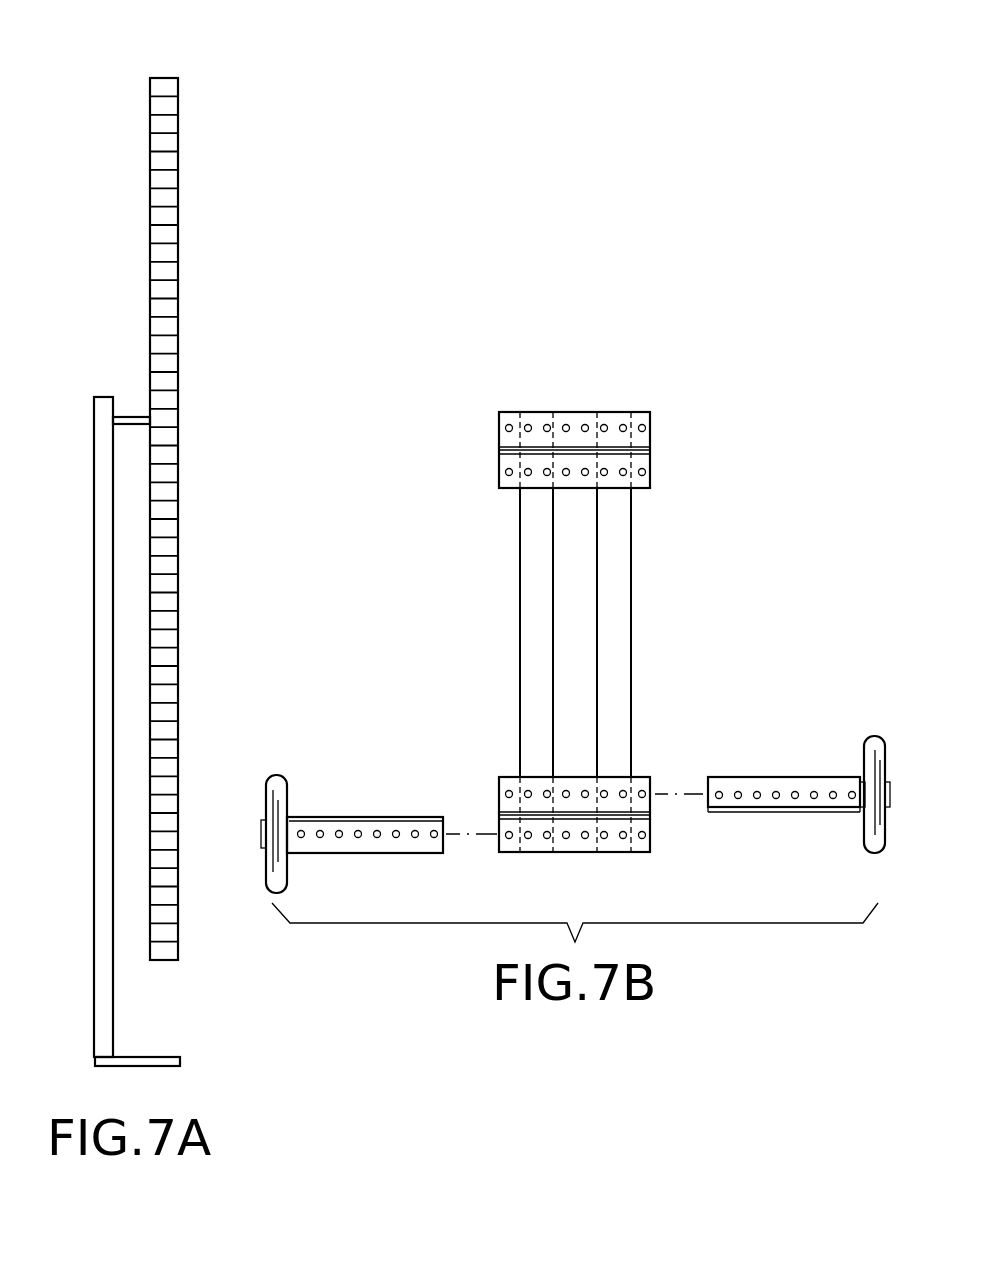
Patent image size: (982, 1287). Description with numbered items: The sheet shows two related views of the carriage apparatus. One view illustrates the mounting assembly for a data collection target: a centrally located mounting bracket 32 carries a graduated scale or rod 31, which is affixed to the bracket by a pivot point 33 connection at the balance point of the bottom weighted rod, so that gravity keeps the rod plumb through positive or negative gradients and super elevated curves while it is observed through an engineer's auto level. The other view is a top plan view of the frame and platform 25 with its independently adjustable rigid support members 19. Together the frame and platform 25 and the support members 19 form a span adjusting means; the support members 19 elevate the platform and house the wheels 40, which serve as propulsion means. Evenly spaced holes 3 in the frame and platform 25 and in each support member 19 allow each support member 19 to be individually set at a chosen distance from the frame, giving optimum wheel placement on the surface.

In FIG. 7A, the graduated rod 31 is at (178, 190).
In FIG. 7A, the mounting bracket 32 is at (94, 458).
In FIG. 7A, the pivot point 33 is at (150, 412).
In FIG. 7B, the frame and platform 25 is at (650, 412).
In FIG. 7B, the holes 3 is at (719, 790).
In FIG. 7B, the rigid support members 19 is at (780, 812).
In FIG. 7B, the wheels 40 is at (277, 782).